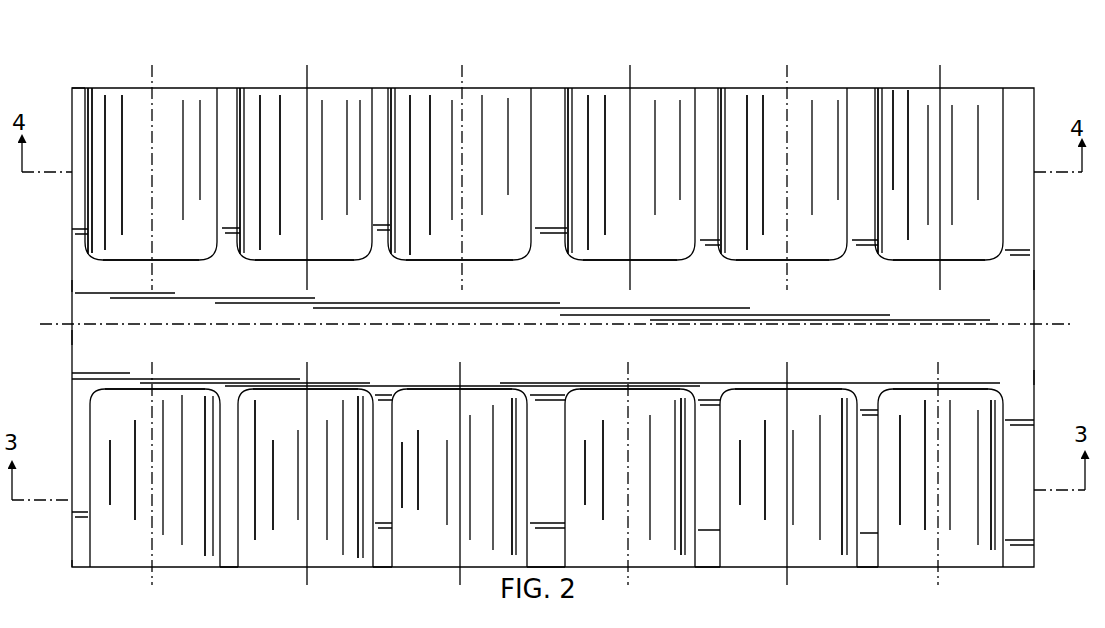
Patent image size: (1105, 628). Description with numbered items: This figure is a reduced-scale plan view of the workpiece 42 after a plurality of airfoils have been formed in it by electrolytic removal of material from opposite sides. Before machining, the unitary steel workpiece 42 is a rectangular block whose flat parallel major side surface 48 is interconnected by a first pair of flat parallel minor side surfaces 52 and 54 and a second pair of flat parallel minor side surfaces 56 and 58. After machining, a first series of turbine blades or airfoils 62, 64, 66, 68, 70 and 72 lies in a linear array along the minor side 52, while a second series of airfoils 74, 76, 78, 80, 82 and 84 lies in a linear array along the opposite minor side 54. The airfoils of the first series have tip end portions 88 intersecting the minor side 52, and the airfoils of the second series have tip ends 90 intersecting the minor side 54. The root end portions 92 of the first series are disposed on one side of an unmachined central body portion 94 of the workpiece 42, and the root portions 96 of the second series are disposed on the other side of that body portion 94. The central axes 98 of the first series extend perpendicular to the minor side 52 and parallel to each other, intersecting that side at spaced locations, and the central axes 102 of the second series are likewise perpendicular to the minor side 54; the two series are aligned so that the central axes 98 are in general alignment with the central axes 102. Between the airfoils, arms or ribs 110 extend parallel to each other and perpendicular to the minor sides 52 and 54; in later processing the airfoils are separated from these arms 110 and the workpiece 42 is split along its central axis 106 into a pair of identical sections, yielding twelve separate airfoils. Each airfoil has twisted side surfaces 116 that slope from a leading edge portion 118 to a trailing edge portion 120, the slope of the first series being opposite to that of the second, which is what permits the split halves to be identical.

The workpiece 42 is at (1022, 83).
The major side surface 48 is at (78, 332).
The minor side surface 52 is at (84, 88).
The minor side surface 54 is at (77, 570).
The minor side surface 56 is at (72, 286).
The minor side surface 58 is at (1034, 376).
The airfoil 62 is at (196, 86).
The airfoil 64 is at (350, 86).
The airfoil 66 is at (505, 86).
The airfoil 68 is at (683, 86).
The airfoil 70 is at (844, 86).
The airfoil 72 is at (976, 86).
The airfoil 74 is at (124, 574).
The airfoil 76 is at (278, 572).
The airfoil 78 is at (438, 572).
The airfoil 80 is at (668, 571).
The airfoil 82 is at (818, 571).
The airfoil 84 is at (985, 571).
The tip end portion 88 is at (146, 64).
The tip end 90 is at (182, 568).
The root end portion 92 is at (130, 260).
The central body portion 94 is at (1010, 280).
The root portion 96 is at (116, 389).
The central axis 98 is at (150, 238).
The central axis 102 is at (150, 535).
The central axis 106 is at (230, 333).
The arm 110 is at (82, 100).
The side surface 116 is at (130, 196).
The leading edge portion 118 is at (207, 166).
The trailing edge portion 120 is at (92, 143).